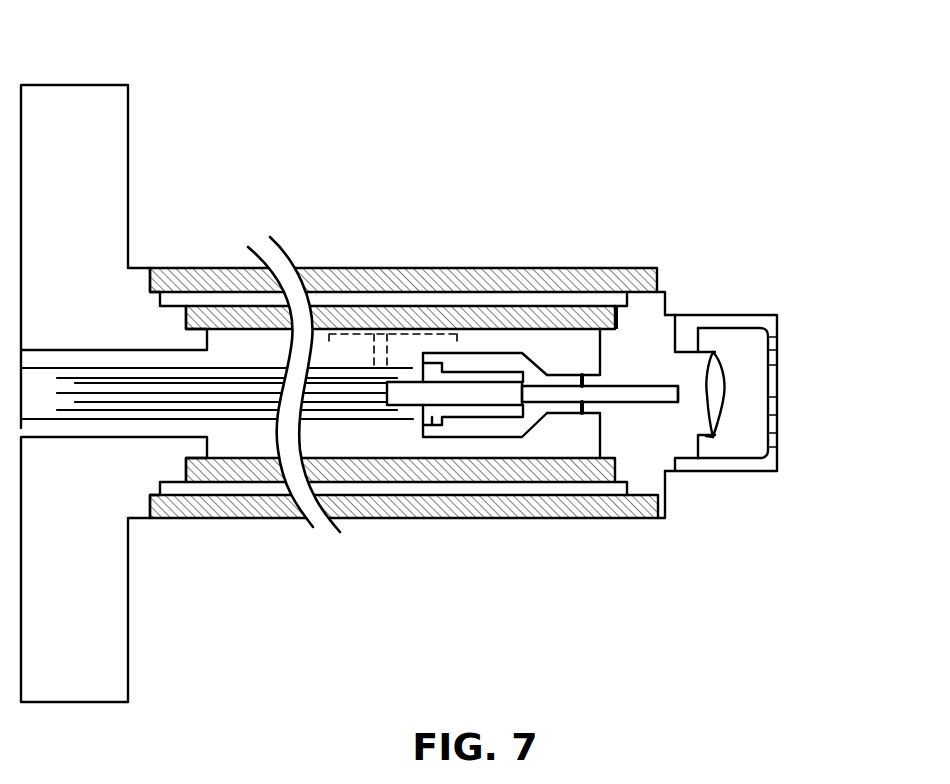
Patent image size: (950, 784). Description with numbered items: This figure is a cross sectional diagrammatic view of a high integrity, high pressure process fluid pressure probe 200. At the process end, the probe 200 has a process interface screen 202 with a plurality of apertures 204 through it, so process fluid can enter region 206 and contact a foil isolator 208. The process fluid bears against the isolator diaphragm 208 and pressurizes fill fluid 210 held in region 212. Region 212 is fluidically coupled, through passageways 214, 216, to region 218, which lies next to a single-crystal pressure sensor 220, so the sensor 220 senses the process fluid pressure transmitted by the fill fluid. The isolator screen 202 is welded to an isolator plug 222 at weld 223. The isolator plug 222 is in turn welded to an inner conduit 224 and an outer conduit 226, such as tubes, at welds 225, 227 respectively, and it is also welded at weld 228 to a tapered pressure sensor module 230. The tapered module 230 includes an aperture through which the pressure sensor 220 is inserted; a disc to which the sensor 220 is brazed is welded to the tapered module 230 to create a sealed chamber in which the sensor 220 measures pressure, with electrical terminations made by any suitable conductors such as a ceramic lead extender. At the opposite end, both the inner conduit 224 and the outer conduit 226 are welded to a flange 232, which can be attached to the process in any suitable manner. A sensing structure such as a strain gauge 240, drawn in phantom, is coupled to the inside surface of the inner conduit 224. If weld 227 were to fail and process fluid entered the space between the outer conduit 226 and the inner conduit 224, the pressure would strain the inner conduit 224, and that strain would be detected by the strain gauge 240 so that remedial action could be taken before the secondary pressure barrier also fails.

The probe 200 is at (722, 103).
The process interface screen 202 is at (767, 463).
The apertures 204 is at (772, 413).
The region 206 is at (745, 349).
The foil isolator 208 is at (727, 397).
The fill fluid 210 is at (706, 436).
The region 212 is at (710, 352).
The passageway 214 is at (682, 395).
The passageway 216 is at (549, 402).
The region 218 is at (432, 418).
The single-crystal pressure sensor 220 is at (475, 377).
The isolator plug 222 is at (668, 367).
The weld 223 is at (677, 315).
The inner conduit 224 is at (331, 306).
The weld 225 is at (618, 322).
The outer conduit 226 is at (380, 268).
The weld 227 is at (659, 288).
The weld 228 is at (582, 408).
The tapered pressure sensor module 230 is at (540, 375).
The flange 232 is at (97, 242).
The strain gauge 240 is at (398, 331).